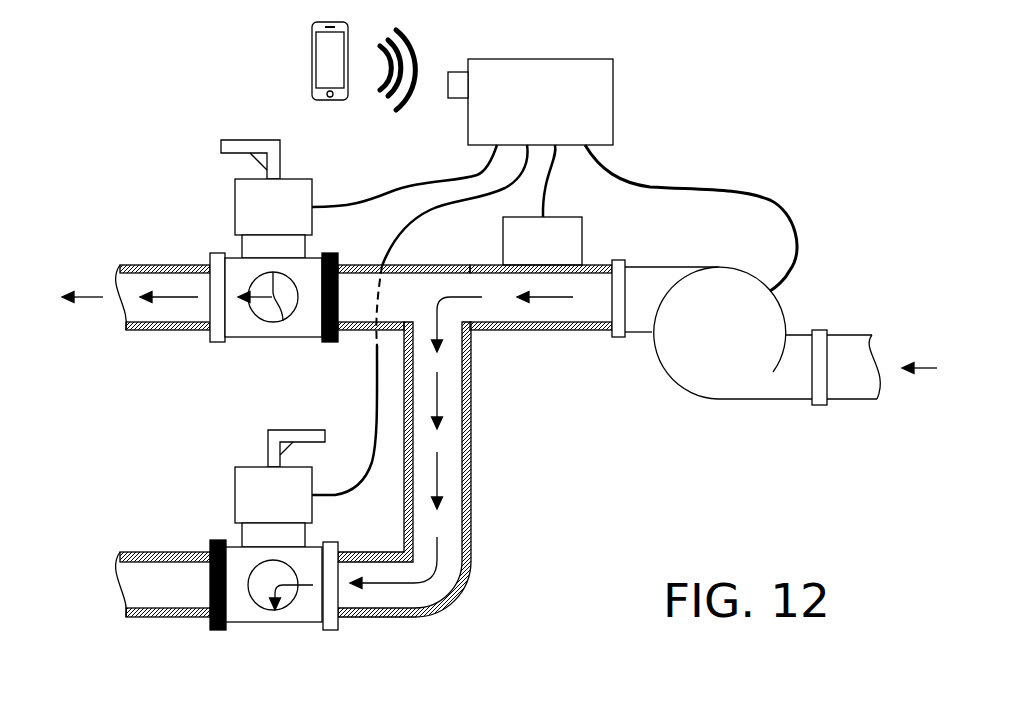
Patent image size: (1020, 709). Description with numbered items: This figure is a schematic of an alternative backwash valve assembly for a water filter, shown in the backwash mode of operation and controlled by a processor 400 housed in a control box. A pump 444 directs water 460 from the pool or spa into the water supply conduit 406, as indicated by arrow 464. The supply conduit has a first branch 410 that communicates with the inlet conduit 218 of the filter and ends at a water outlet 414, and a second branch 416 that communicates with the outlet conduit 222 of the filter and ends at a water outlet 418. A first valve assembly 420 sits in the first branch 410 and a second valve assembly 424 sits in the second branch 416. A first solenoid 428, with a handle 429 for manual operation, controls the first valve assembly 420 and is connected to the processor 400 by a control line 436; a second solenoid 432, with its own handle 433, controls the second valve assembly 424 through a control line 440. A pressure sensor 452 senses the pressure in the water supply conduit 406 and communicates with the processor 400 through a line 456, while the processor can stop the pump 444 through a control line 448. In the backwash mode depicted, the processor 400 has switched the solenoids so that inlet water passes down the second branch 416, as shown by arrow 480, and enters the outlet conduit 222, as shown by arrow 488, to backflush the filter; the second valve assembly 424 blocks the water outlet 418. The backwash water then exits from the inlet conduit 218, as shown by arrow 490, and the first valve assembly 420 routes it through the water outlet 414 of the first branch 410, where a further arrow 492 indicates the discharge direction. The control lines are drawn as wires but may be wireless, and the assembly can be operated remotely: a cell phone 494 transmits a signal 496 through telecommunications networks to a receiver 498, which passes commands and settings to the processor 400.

The processor 400 is at (613, 103).
The receiver 498 is at (458, 72).
The signal 496 is at (417, 48).
The cell phone 494 is at (312, 60).
The control line 436 is at (458, 177).
The control line 440 is at (438, 205).
The control line 456 is at (590, 195).
The control line 448 is at (775, 207).
The pressure sensor 452 is at (582, 240).
The handle 429 is at (240, 141).
The first solenoid 428 is at (235, 205).
The water outlet 414 is at (160, 265).
The first branch 410 is at (355, 265).
The water supply conduit 406 is at (510, 330).
The first valve assembly 420 is at (300, 337).
The inlet conduit 218 is at (258, 318).
The arrow 490 is at (282, 318).
The outlet flow direction 492 is at (93, 298).
The arrow 464 is at (553, 300).
The pump 444 is at (718, 400).
The water 460 is at (930, 369).
The second branch 416 is at (470, 503).
The arrow 480 is at (440, 467).
The handle 433 is at (318, 428).
The second solenoid 432 is at (235, 495).
The water outlet 418 is at (165, 618).
The second valve assembly 424 is at (237, 547).
The outlet conduit 222 is at (294, 604).
The arrow 488 is at (288, 565).